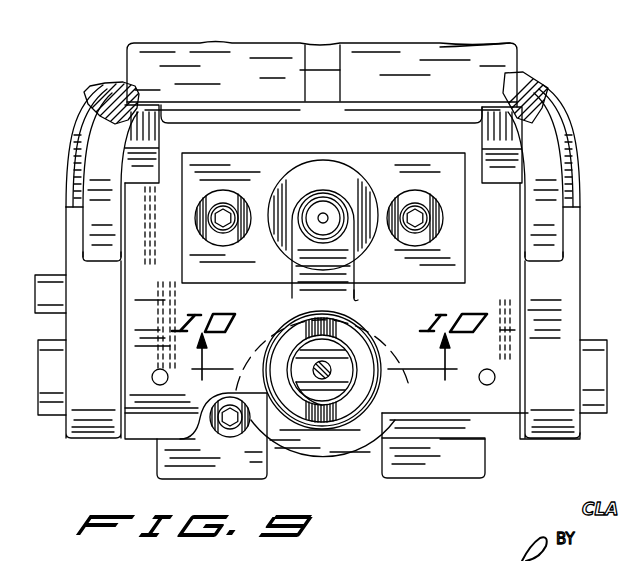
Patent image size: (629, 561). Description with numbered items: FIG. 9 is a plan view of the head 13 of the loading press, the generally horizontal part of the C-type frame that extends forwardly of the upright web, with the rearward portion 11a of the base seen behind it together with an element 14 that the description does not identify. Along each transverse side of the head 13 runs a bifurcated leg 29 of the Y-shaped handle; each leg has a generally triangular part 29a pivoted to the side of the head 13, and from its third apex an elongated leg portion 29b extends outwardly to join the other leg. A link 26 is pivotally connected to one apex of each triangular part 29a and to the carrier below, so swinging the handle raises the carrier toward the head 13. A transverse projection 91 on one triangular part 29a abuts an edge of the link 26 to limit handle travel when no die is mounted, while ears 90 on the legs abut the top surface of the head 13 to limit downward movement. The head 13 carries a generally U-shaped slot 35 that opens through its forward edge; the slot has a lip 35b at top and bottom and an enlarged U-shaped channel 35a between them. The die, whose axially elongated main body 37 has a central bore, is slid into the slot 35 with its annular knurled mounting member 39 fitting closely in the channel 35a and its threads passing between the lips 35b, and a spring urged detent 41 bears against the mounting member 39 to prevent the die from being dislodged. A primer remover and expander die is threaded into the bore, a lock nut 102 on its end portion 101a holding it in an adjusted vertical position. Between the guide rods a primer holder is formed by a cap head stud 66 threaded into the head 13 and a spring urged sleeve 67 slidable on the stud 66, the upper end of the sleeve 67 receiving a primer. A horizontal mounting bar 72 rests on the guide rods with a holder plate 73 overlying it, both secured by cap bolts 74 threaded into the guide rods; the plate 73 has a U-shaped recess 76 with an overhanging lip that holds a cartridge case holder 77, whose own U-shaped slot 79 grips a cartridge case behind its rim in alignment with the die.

The top plate 14 is at (333, 60).
The rearward portion of the base 11a is at (478, 26).
The head 13 is at (502, 302).
The bifurcated leg 29 is at (72, 234).
The triangular part 29a is at (565, 302).
The elongated leg portion 29b is at (556, 143).
The transverse projection 91 is at (43, 293).
The link 26 is at (47, 408).
The ear 90 is at (505, 178).
The holder plate 73 is at (438, 170).
The cap bolt 74 is at (212, 221).
The cartridge case holder 77 is at (357, 183).
The U-shaped slot 79 is at (291, 211).
The sleeve 67 is at (318, 186).
The cap head stud 66 is at (327, 212).
The recess 76 is at (356, 277).
The mounting bar 72 is at (303, 280).
The main body 37 is at (358, 352).
The end portion 101a is at (333, 373).
The lock nut 102 is at (327, 397).
The mounting member 39 is at (348, 452).
The detent 41 is at (225, 432).
The slot 35 is at (382, 474).
The enlarged U-shaped channel 35a is at (428, 487).
The lip 35b is at (268, 472).